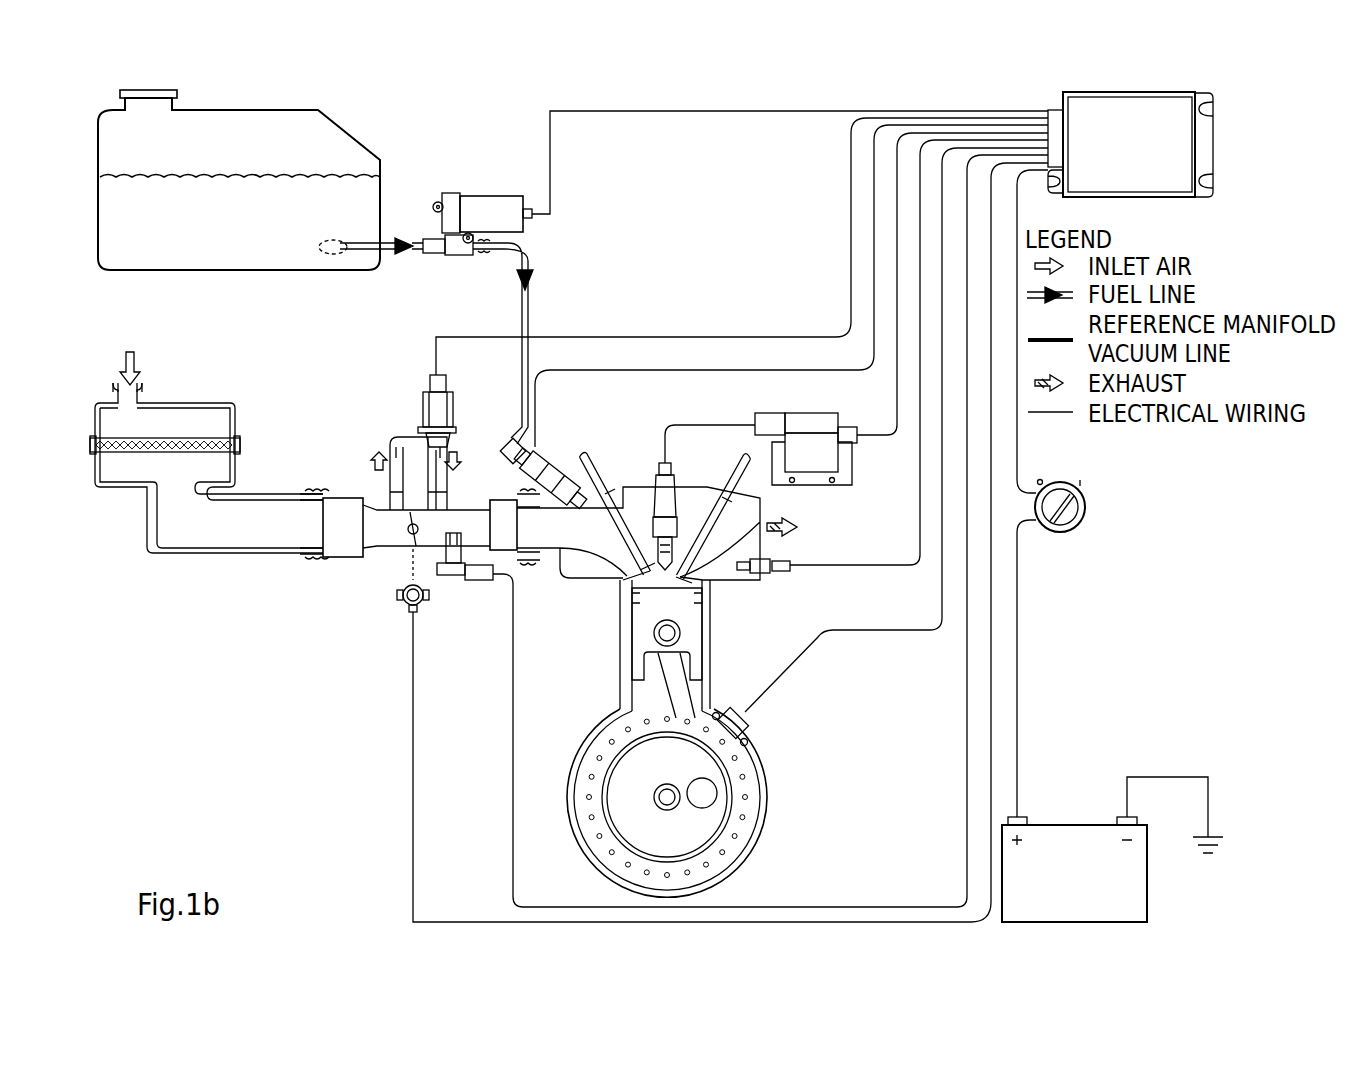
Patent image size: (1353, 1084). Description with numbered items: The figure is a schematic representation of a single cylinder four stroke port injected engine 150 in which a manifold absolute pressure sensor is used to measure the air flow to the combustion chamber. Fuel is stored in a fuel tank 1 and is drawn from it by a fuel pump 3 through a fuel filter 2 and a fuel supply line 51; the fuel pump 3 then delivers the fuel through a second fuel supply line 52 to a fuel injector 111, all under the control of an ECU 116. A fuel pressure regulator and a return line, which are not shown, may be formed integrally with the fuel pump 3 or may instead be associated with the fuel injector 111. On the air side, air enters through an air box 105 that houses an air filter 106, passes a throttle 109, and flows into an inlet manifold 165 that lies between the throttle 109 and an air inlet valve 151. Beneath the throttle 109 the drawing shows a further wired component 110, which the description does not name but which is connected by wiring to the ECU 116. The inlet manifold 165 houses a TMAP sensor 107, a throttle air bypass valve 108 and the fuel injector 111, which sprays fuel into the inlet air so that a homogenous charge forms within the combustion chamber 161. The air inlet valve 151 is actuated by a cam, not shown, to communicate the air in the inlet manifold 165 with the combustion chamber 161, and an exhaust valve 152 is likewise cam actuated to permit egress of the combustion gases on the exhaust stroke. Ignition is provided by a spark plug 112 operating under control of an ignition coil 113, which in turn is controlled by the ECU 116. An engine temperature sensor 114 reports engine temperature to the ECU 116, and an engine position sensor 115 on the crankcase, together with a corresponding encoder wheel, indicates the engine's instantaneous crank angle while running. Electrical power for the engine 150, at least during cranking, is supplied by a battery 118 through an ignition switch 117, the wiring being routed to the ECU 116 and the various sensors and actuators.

The fuel tank 1 is at (239, 175).
The fuel filter 2 is at (326, 235).
The fuel pump 3 is at (740, 183).
The fuel supply line 51 is at (392, 231).
The fuel supply line 52 is at (516, 352).
The air box 105 is at (113, 393).
The air filter 106 is at (165, 436).
The TMAP sensor 107 is at (742, 531).
The throttle air bypass valve 108 is at (709, 314).
The throttle 109 is at (398, 546).
The throttle position sensor 110 is at (706, 542).
The fuel injector 111 is at (780, 319).
The spark plug 112 is at (687, 497).
The ignition coil 113 is at (901, 309).
The engine temperature sensor 114 is at (892, 371).
The engine position sensor 115 is at (881, 447).
The ECU 116 is at (1130, 130).
The ignition switch 117 is at (1051, 493).
The battery 118 is at (1112, 849).
The four stroke engine 150 is at (667, 806).
The air inlet valve 151 is at (618, 503).
The exhaust valve 152 is at (713, 510).
The combustion chamber 161 is at (683, 645).
The inlet manifold 165 is at (632, 651).